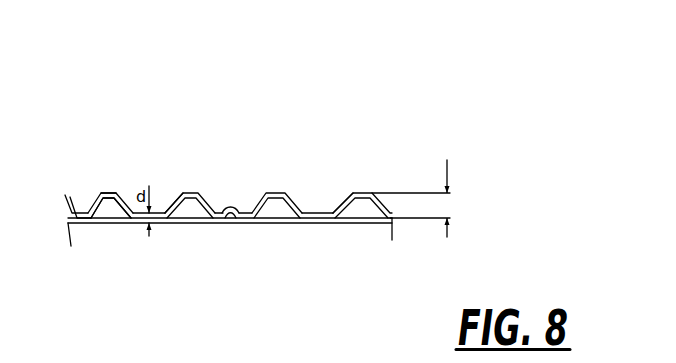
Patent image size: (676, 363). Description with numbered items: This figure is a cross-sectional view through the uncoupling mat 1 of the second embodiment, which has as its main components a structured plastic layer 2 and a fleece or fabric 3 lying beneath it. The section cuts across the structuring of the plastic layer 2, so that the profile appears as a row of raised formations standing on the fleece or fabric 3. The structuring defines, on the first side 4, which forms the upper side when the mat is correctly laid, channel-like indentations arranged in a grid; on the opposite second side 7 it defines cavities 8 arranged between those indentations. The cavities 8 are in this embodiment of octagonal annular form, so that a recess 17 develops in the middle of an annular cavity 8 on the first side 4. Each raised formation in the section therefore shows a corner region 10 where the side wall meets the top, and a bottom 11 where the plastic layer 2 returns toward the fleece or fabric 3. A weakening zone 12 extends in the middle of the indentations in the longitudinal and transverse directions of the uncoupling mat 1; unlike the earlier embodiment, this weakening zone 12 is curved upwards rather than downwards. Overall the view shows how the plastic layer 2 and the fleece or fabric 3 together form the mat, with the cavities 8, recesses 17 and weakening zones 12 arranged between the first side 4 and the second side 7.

The uncoupling mat 1 is at (438, 152).
The plastic layer 2 is at (276, 172).
The fleece or fabric 3 is at (281, 218).
The first side 4 is at (113, 175).
The second side 7 is at (105, 214).
The cavity 8 is at (292, 215).
The corner region 10 is at (93, 198).
The bottom 11 is at (72, 196).
The weakening zone 12 is at (231, 217).
The recess 17 is at (169, 200).